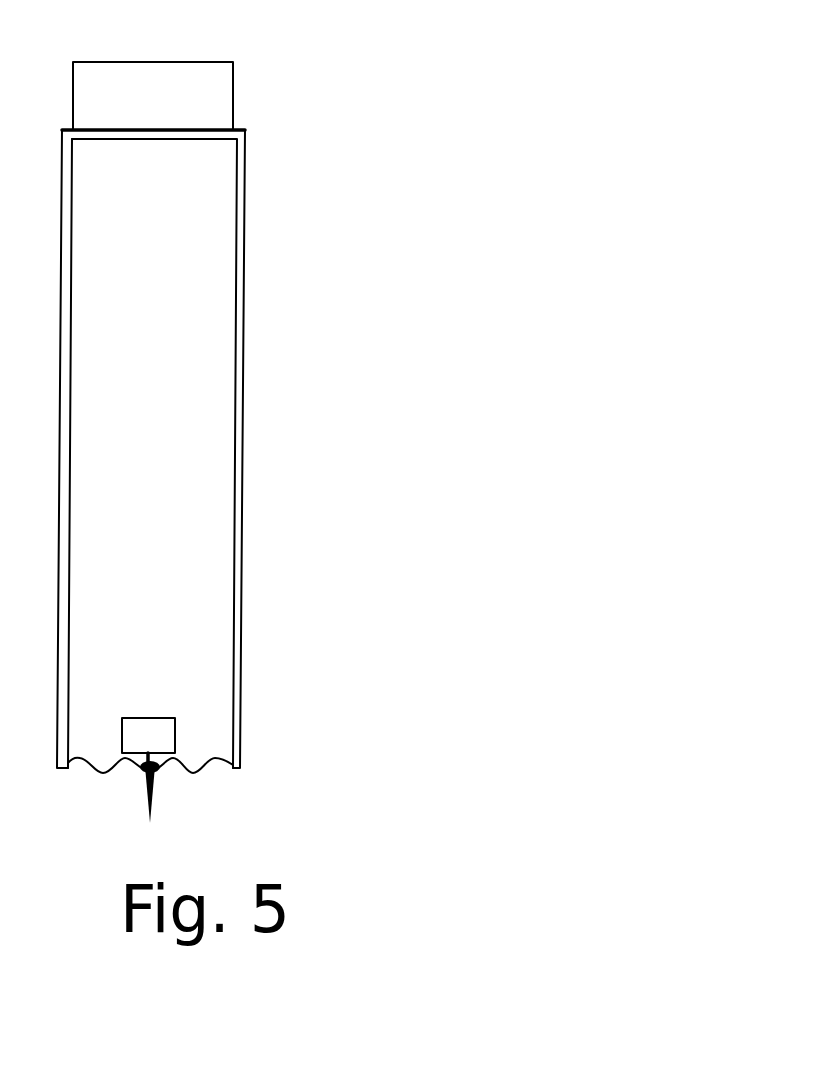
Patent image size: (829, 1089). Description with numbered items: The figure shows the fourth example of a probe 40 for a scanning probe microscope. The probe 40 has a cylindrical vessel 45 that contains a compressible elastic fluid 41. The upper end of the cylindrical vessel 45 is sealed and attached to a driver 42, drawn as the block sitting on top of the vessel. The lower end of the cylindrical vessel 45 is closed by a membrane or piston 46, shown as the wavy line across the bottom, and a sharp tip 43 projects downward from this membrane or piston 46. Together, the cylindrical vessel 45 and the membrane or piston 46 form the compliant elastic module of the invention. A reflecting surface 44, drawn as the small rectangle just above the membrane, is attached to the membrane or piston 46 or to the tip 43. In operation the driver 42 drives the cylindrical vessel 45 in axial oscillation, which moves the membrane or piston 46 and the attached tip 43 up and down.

The probe 40 is at (283, 458).
The compressible elastic fluid 41 is at (213, 303).
The driver 42 is at (226, 86).
The sharp tip 43 is at (170, 810).
The reflecting surface 44 is at (192, 720).
The cylindrical vessel 45 is at (253, 195).
The membrane or piston 46 is at (201, 756).